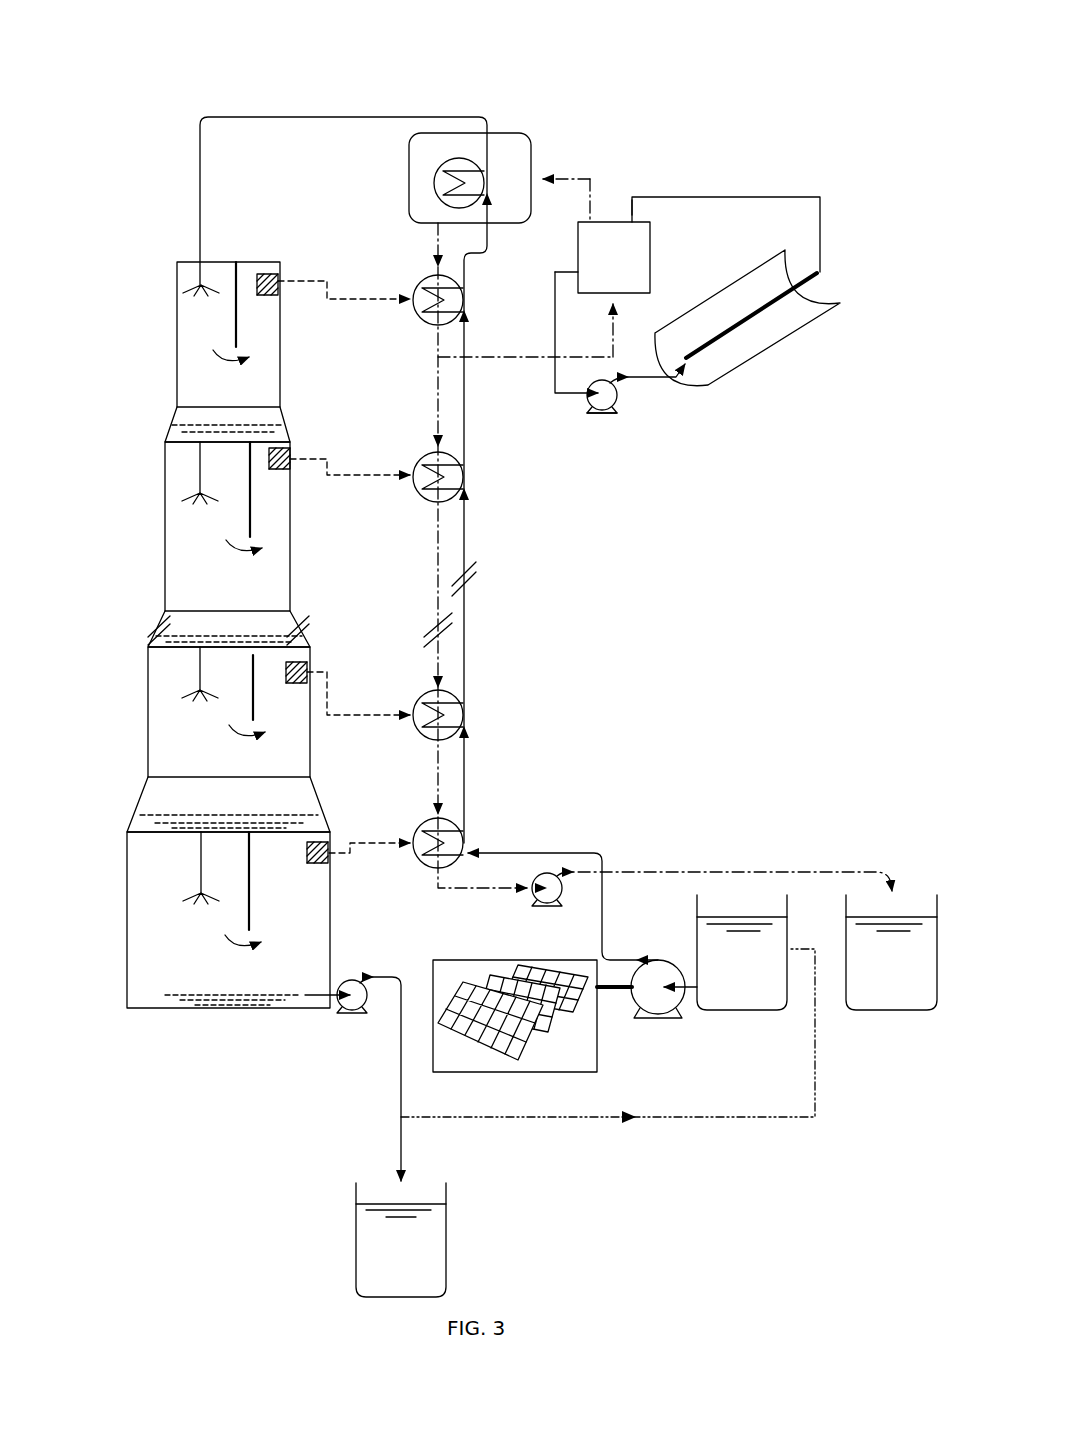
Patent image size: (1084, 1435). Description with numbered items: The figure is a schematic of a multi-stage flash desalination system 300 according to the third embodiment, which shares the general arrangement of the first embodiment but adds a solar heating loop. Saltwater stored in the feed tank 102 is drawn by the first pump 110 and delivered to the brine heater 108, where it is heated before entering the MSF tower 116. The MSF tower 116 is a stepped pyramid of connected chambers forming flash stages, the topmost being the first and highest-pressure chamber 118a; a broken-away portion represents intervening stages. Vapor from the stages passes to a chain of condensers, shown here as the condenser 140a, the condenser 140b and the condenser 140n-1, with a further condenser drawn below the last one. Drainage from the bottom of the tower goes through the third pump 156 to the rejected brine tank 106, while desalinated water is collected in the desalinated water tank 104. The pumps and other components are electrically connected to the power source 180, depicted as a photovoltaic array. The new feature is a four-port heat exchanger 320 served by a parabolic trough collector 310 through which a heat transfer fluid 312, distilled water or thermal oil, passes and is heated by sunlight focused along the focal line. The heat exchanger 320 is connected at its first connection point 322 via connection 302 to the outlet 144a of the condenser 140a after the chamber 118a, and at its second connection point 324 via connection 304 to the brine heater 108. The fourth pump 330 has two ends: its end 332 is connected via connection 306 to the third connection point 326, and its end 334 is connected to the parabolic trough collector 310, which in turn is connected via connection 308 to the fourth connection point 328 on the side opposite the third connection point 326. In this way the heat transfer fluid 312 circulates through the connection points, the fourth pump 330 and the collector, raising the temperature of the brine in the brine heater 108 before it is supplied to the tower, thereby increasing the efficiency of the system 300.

The multi-stage flash (MSF) desalination system 300 is at (782, 30).
The MSF tower 116 is at (166, 235).
The chamber 118a is at (177, 333).
The brine heater 108 is at (434, 182).
The condenser 140a is at (422, 281).
The outlet 144a is at (420, 320).
The condenser 140b is at (422, 460).
The condenser 140n-1 is at (422, 698).
The fluid connection 304 is at (560, 172).
The second connection point 324 is at (590, 220).
The fluid connection 308 is at (727, 197).
The third connection point 326 is at (578, 265).
The fourth connection point 328 is at (644, 205).
The heat exchanger 320 is at (650, 245).
The heat transfer fluid 312 is at (805, 280).
The fluid connection 306 is at (555, 328).
The first connection point 322 is at (612, 295).
The fluid connection 302 is at (513, 358).
The parabolic trough collector 310 is at (740, 367).
The end of fourth pump 334 is at (620, 385).
The end of fourth pump 332 is at (593, 408).
The fourth pump 330 is at (614, 414).
The third pump 156 is at (353, 1016).
The power source 180 is at (530, 1073).
The first pump 110 is at (660, 1019).
The feed tank 102 is at (742, 1011).
The desalinated water tank 104 is at (892, 1011).
The rejected brine tank 106 is at (356, 1235).